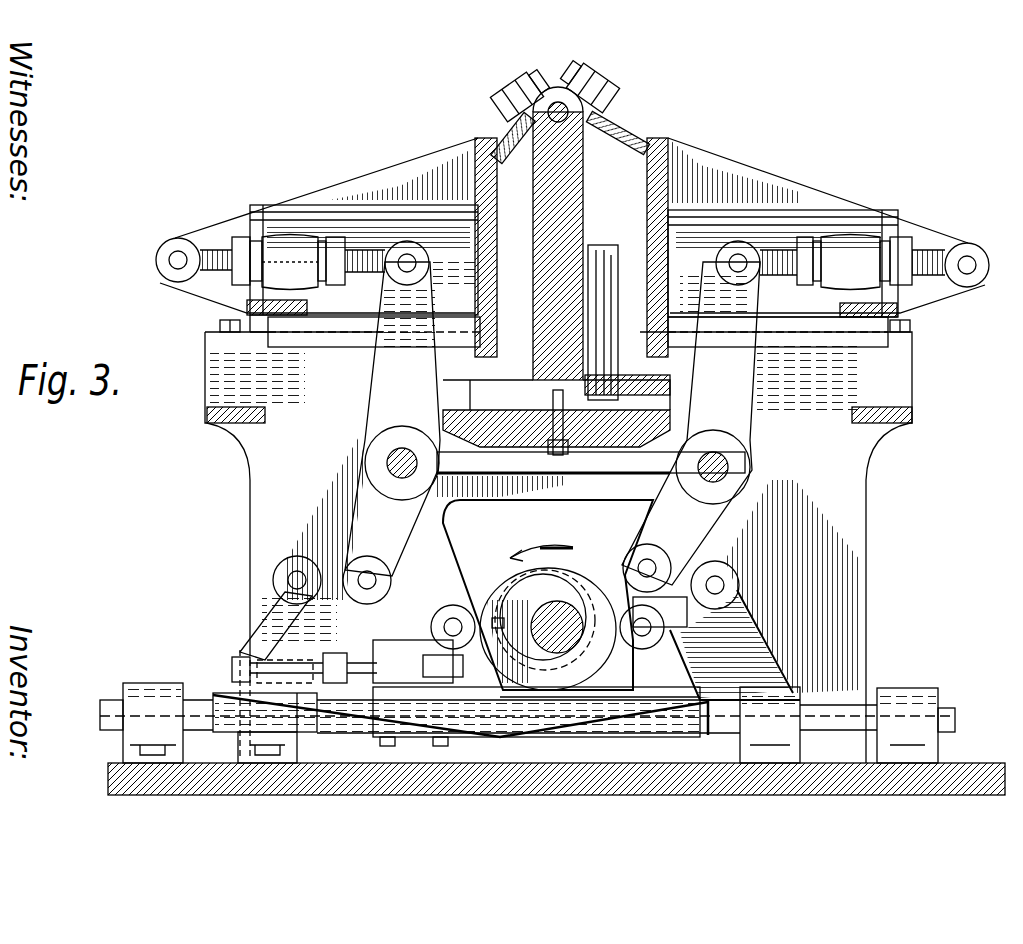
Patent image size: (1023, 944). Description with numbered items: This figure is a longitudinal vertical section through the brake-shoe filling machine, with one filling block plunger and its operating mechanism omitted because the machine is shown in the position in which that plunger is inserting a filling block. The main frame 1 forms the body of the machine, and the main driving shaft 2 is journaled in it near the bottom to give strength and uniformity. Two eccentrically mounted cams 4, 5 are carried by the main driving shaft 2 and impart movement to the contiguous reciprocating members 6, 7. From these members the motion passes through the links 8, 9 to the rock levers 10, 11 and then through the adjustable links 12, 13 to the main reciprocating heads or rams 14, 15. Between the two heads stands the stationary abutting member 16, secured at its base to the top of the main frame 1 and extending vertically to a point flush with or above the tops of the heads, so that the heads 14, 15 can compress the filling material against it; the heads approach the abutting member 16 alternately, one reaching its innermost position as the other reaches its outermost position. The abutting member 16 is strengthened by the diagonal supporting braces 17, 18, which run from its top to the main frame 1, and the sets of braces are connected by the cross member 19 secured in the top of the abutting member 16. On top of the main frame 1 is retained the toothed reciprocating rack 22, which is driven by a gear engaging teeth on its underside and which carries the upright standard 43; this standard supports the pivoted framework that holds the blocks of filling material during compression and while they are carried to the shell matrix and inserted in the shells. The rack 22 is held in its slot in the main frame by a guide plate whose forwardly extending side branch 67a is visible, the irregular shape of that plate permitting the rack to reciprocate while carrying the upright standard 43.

The main frame 1 is at (207, 408).
The main driving shaft 2 is at (550, 613).
The eccentrically mounted cam 4 is at (568, 800).
The eccentrically mounted cam 5 is at (580, 587).
The reciprocating member 6 is at (760, 627).
The reciprocating member 7 is at (425, 713).
The link 8 is at (690, 562).
The link 9 is at (330, 563).
The rock lever 10 is at (733, 410).
The rock lever 11 is at (383, 397).
The adjustable link 12 is at (853, 257).
The adjustable link 13 is at (283, 243).
The main reciprocating head 14 is at (410, 172).
The main reciprocating head 15 is at (773, 187).
The stationary abutting member 16 is at (545, 160).
The diagonal supporting brace 17 is at (512, 122).
The diagonal supporting brace 18 is at (630, 143).
The cross member 19 is at (565, 112).
The reciprocating rack 22 is at (603, 410).
The upright standard 43 is at (597, 260).
The forwardly extending side branch 67a is at (647, 590).